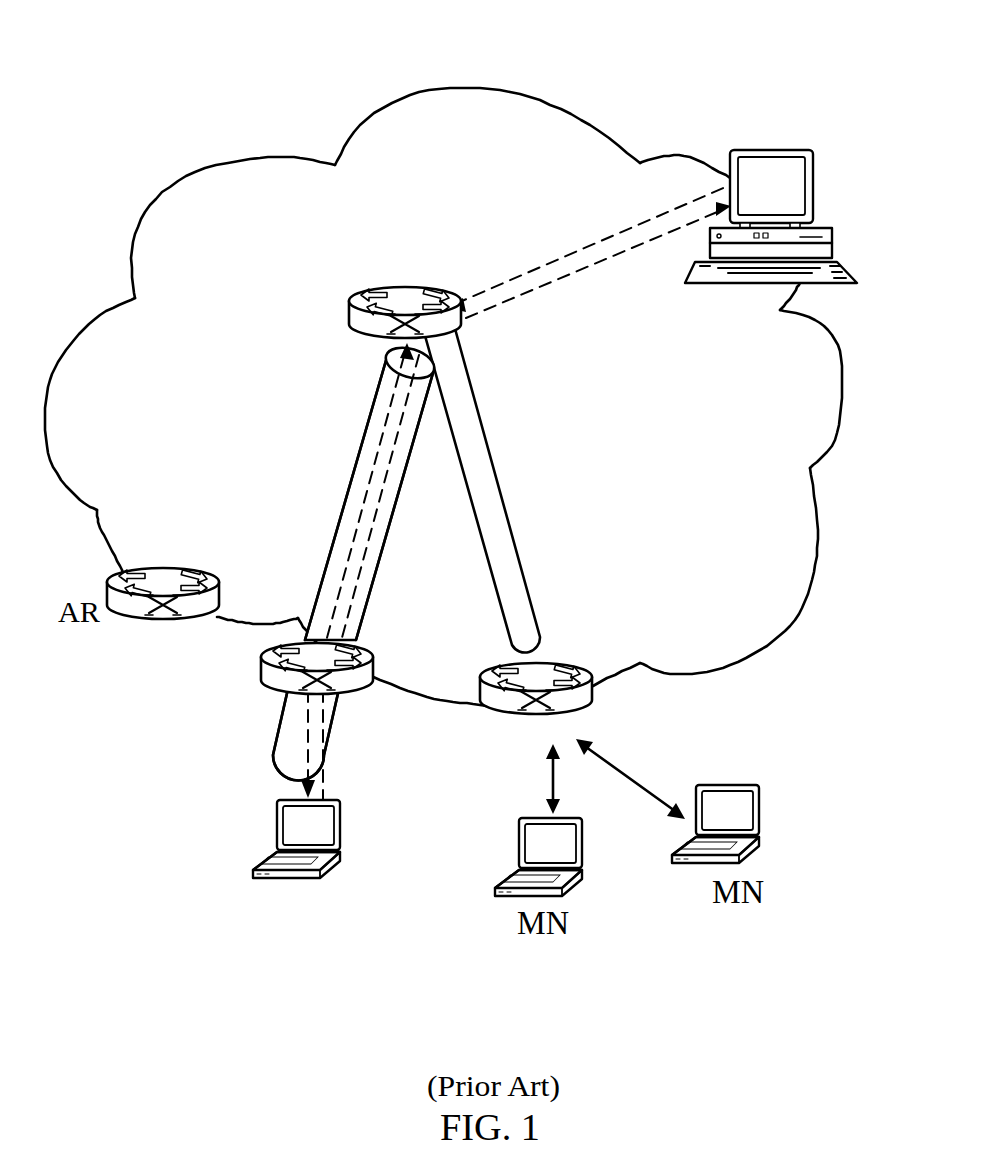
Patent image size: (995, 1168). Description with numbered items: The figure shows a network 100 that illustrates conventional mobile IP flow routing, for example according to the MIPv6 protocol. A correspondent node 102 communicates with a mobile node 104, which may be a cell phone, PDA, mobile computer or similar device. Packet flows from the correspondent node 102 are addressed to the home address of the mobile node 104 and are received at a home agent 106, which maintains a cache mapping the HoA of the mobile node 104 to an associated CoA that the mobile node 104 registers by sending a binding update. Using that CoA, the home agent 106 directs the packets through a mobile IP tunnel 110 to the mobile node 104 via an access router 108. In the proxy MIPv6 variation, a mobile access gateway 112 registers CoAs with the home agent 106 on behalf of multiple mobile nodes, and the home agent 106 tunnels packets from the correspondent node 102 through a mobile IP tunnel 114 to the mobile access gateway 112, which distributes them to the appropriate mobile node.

The network 100 is at (116, 74).
The correspondent node 102 is at (777, 148).
The mobile node 104 is at (278, 812).
The home agent 106 is at (370, 287).
The access router 108 is at (373, 655).
The mobile IP tunnel 110 is at (362, 447).
The mobile access gateway 112 is at (505, 717).
The mobile IP tunnel 114 is at (511, 528).